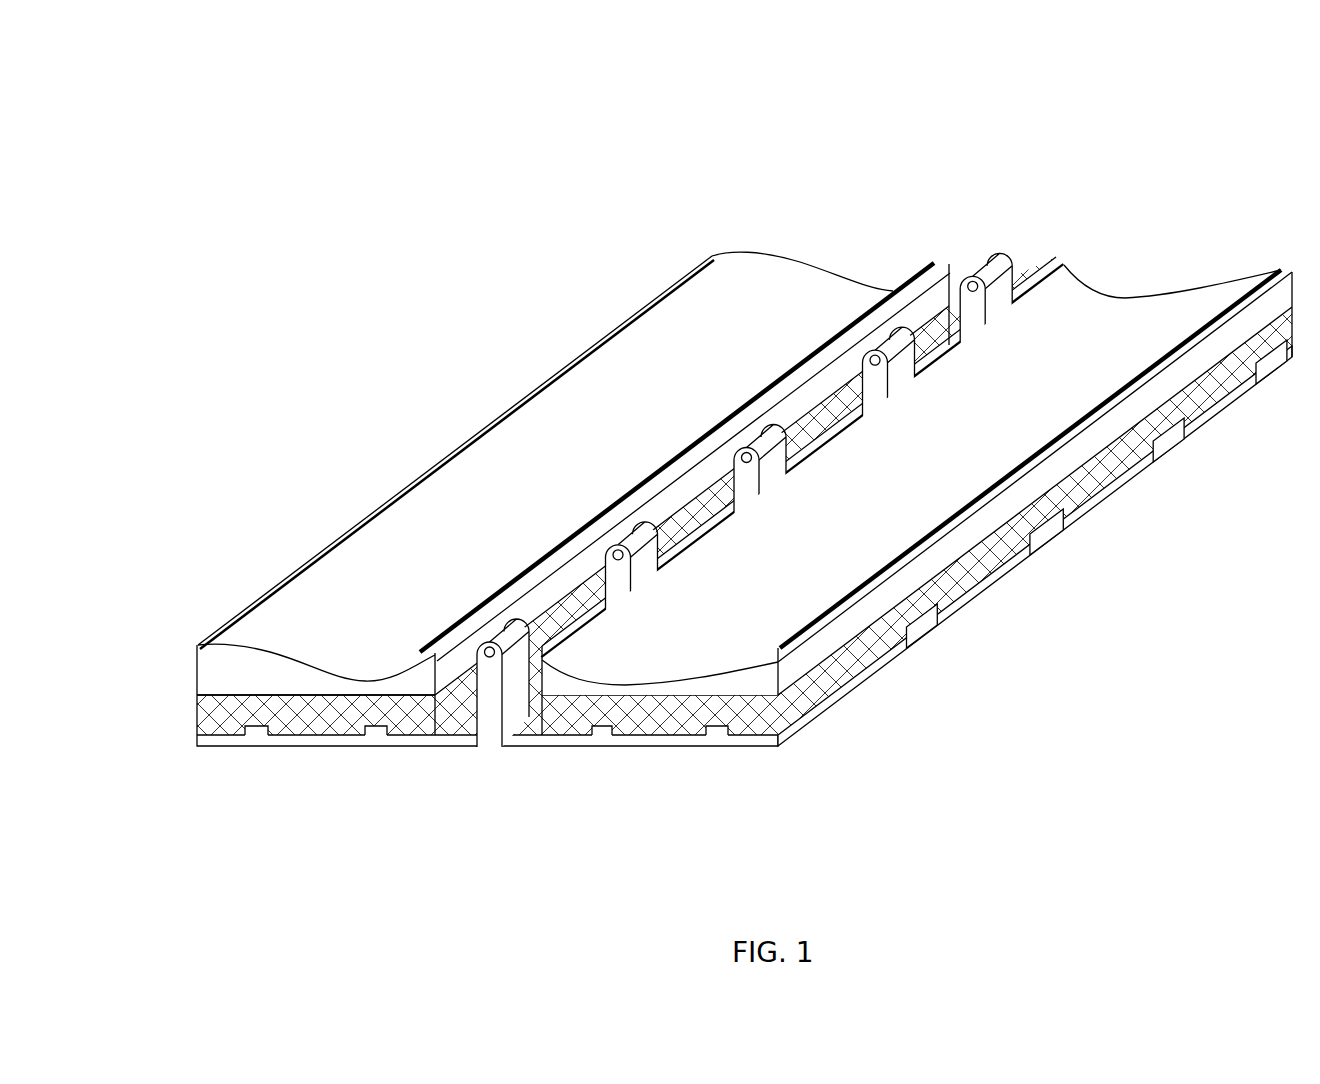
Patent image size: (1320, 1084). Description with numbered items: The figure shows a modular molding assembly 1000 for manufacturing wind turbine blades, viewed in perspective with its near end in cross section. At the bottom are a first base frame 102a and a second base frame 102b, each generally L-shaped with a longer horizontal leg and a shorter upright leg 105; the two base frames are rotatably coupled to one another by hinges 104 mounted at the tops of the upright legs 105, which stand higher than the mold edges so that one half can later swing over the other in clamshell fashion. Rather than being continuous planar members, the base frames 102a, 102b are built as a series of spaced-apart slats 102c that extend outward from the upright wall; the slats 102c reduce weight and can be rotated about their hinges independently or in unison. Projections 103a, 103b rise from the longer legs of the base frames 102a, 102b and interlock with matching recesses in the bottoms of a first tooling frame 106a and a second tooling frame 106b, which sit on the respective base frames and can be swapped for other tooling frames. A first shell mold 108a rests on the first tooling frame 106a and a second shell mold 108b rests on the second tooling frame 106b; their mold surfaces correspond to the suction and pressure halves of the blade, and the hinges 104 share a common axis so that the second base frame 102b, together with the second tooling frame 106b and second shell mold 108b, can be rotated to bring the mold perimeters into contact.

The modular molding assembly 1000 is at (289, 89).
The first base frame 102a is at (225, 743).
The second base frame 102b is at (747, 752).
The slats 102c is at (928, 630).
The projections 103a is at (377, 732).
The projections 103b is at (718, 735).
The hinges 104 is at (997, 260).
The leg 105 is at (1005, 282).
The first tooling frame 106a is at (203, 723).
The second tooling frame 106b is at (1110, 478).
The first shell mold 108a is at (545, 498).
The second shell mold 108b is at (1123, 305).